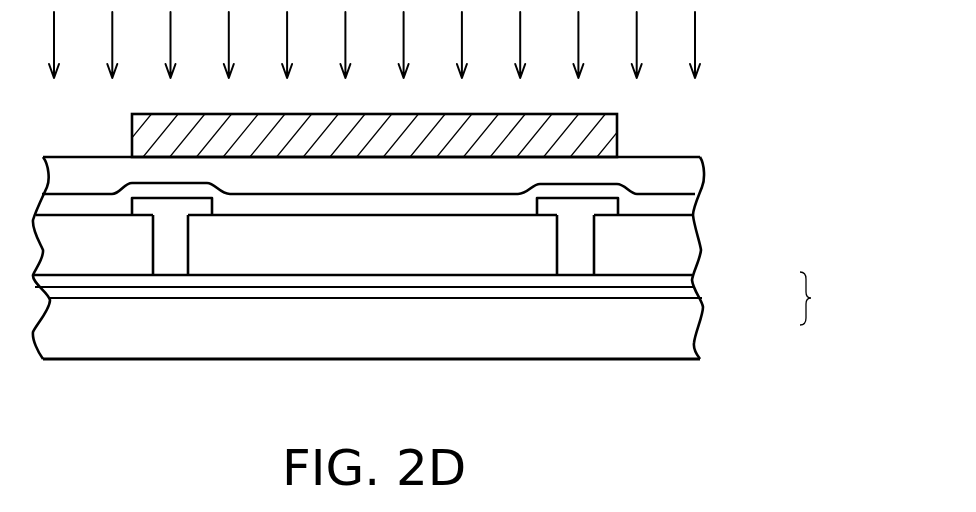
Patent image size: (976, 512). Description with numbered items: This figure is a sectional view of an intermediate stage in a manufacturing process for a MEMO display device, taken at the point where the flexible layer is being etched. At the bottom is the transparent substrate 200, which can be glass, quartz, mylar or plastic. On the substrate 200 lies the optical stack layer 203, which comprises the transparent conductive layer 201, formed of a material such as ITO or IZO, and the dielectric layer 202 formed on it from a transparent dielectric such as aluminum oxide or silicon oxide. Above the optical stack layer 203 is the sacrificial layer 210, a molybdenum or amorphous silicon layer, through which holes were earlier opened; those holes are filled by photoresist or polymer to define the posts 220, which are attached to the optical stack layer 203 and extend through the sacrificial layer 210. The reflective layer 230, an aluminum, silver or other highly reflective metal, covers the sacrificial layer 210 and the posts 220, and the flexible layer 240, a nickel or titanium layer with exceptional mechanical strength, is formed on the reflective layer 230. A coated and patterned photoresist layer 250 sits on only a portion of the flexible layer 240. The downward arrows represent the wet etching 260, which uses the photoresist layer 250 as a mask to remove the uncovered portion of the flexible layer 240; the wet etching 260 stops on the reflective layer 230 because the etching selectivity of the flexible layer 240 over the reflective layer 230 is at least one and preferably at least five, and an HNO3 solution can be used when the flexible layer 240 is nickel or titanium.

The transparent substrate 200 is at (648, 347).
The transparent conductive layer 201 is at (693, 297).
The dielectric layer 202 is at (695, 280).
The optical stack layer 203 is at (832, 298).
The sacrificial layer 210 is at (682, 247).
The posts 220 is at (171, 265).
The reflective layer 230 is at (682, 210).
The flexible layer 240 is at (682, 178).
The photoresist layer 250 is at (617, 130).
The wet etching 260 is at (695, 45).